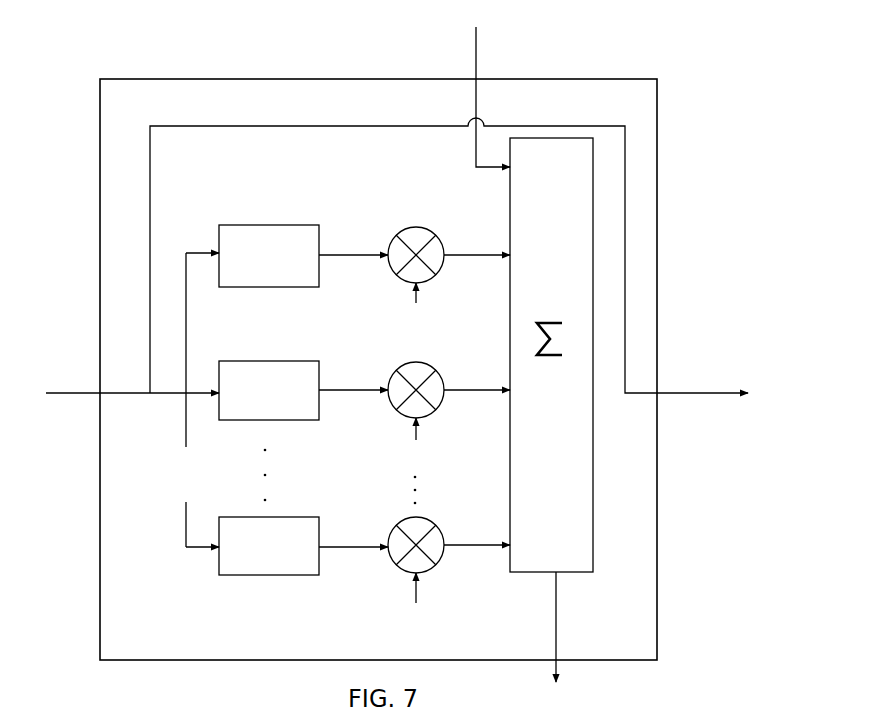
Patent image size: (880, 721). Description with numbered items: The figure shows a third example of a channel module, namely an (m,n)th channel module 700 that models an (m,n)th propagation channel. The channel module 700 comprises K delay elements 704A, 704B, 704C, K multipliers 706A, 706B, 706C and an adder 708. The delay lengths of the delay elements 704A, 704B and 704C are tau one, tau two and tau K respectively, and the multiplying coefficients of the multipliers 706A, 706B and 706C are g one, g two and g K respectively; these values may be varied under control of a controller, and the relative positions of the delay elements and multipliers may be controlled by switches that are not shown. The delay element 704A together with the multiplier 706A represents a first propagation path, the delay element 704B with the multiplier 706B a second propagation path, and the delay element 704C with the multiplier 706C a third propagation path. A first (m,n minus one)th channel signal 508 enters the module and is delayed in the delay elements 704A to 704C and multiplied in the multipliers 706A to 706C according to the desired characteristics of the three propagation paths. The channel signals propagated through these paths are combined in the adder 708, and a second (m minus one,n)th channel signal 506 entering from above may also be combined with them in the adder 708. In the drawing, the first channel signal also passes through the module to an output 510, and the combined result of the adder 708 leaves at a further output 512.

The channel module 700 is at (651, 111).
The second channel signal 506 is at (477, 48).
The first channel signal 508 is at (68, 393).
The pass-through output signal 510 is at (693, 395).
The summed output signal 512 is at (557, 628).
The delay element 704A is at (308, 225).
The delay element 704B is at (308, 361).
The delay element 704C is at (308, 517).
The multiplier 706A is at (428, 235).
The multiplier 706B is at (430, 371).
The multiplier 706C is at (430, 526).
The adder 708 is at (594, 535).